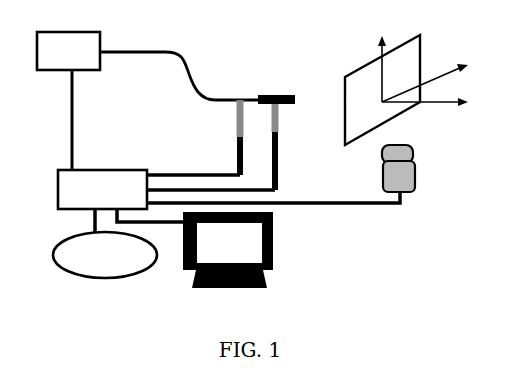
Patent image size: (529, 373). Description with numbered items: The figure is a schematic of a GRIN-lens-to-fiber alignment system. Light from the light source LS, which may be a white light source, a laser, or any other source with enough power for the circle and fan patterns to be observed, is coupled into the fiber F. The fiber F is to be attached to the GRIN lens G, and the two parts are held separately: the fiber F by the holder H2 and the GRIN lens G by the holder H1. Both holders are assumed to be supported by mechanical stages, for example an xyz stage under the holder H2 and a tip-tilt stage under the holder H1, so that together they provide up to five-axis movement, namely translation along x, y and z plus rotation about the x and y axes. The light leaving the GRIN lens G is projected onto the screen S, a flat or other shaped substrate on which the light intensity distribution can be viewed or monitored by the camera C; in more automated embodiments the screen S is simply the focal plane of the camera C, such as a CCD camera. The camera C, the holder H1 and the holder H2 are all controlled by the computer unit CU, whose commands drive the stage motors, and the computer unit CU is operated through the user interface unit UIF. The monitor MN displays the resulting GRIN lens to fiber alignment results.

The light source LS is at (68, 51).
The fiber F is at (160, 52).
The GRIN lens G is at (277, 95).
The holder H1 is at (280, 121).
The holder H2 is at (238, 118).
The screen S is at (420, 35).
The camera C is at (415, 172).
The computer unit CU is at (102, 189).
The user interface unit UIF is at (105, 243).
The monitor MN is at (195, 248).